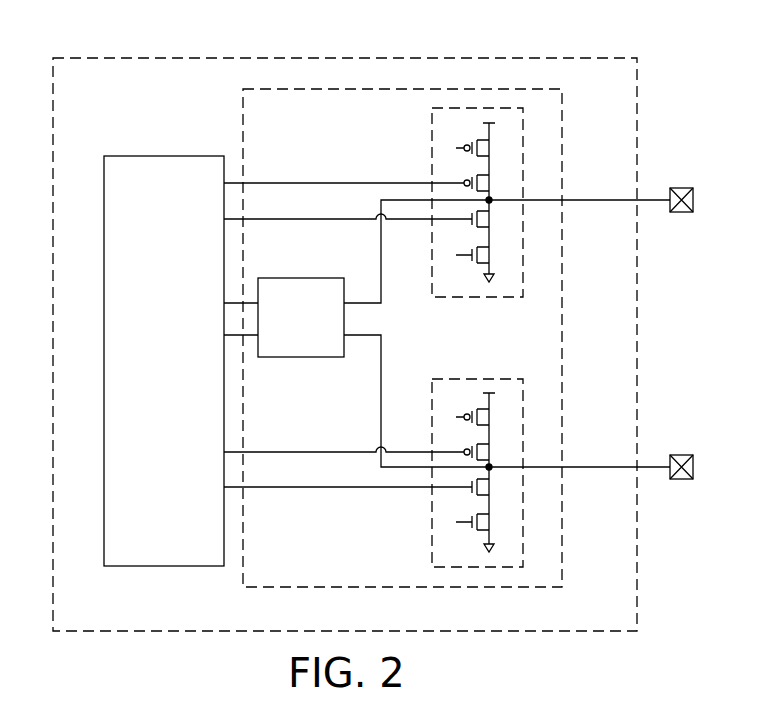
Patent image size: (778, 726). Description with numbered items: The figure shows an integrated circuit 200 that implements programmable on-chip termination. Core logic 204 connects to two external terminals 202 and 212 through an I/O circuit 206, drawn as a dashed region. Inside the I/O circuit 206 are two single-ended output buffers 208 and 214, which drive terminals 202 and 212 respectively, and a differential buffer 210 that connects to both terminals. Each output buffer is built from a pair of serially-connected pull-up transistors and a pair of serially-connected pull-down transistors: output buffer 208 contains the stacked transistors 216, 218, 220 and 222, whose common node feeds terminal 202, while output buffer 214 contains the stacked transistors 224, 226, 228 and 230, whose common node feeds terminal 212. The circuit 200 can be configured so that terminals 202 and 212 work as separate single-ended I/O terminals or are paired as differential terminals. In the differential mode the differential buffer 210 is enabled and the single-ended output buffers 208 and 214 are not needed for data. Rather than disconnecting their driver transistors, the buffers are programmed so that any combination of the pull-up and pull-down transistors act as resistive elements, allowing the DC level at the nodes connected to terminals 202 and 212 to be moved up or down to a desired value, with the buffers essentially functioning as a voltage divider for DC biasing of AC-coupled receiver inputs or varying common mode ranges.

The integrated circuit 200 is at (92, 58).
The external terminal 202 is at (681, 188).
The core logic 204 is at (190, 400).
The I/O circuit 206 is at (243, 566).
The output buffer 208 is at (432, 129).
The differential buffer 210 is at (287, 278).
The external terminal 212 is at (681, 455).
The output buffer 214 is at (455, 379).
The P-channel transistor 216 is at (492, 145).
The P-channel transistor 218 is at (492, 181).
The N-channel transistor 220 is at (492, 216).
The N-channel transistor 222 is at (492, 252).
The P-channel transistor 224 is at (492, 414).
The P-channel transistor 226 is at (492, 449).
The N-channel transistor 228 is at (492, 484).
The N-channel transistor 230 is at (492, 519).